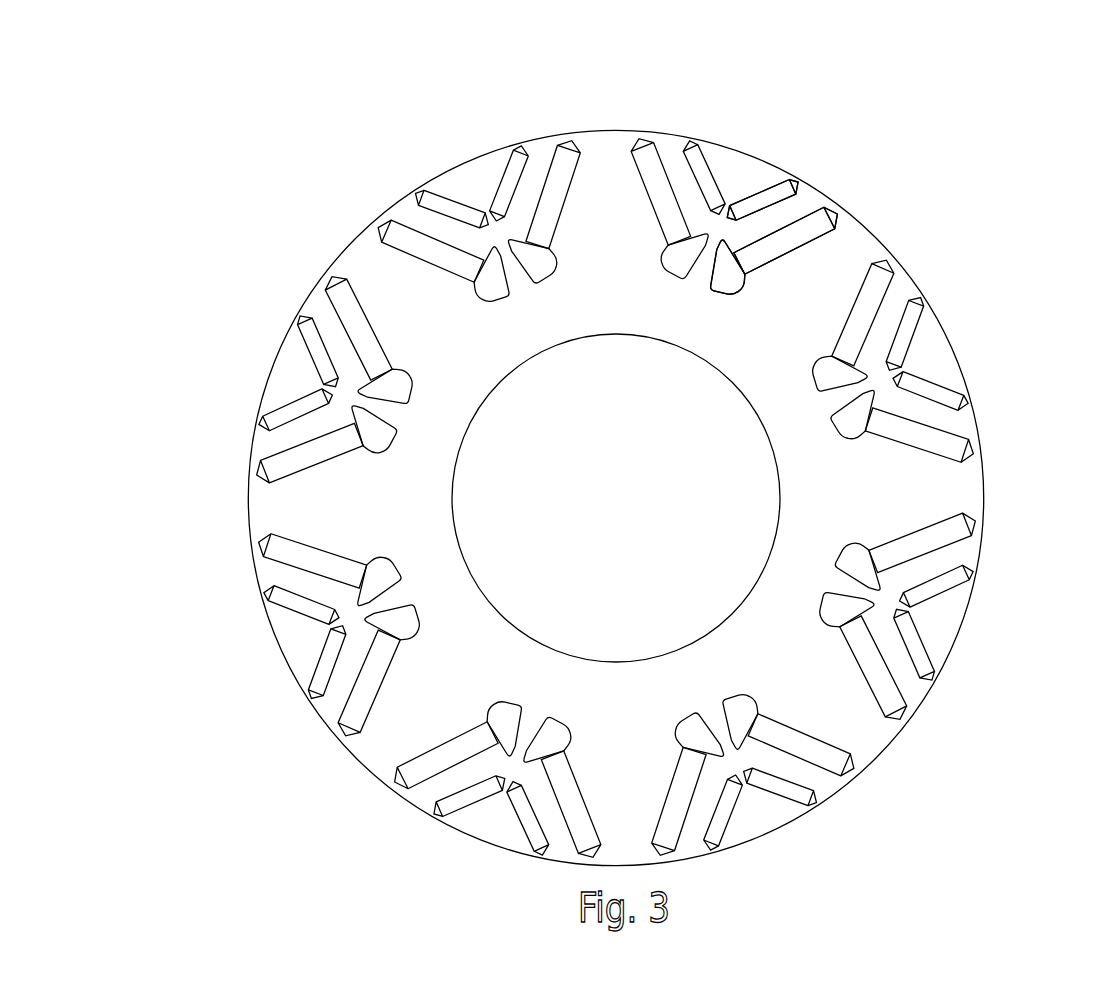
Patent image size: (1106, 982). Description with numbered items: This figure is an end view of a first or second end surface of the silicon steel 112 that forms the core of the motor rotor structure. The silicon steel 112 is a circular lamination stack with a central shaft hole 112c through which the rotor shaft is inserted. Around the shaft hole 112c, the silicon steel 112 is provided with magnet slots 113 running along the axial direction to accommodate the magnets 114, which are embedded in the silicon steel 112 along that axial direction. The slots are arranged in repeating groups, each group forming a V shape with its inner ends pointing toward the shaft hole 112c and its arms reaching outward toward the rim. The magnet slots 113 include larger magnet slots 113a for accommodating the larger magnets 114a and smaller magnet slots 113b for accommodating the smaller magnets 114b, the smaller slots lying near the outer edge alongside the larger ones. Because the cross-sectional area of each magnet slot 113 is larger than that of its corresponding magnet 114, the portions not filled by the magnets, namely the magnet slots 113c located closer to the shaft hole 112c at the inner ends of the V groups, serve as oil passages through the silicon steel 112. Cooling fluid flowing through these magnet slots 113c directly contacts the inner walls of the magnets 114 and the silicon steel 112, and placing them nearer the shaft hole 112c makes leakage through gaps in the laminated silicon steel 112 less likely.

The silicon steel 112 is at (287, 182).
The shaft hole 112c is at (760, 486).
The magnet slots 113 is at (1018, 155).
The larger magnet slots 113a is at (742, 247).
The smaller magnet slots 113b is at (790, 198).
The magnet slots 113c is at (740, 283).
The magnets 114 is at (785, 58).
The larger magnets 114a is at (703, 192).
The smaller magnets 114b is at (768, 186).